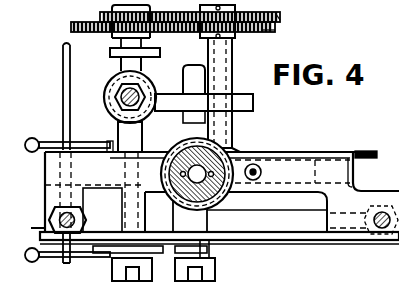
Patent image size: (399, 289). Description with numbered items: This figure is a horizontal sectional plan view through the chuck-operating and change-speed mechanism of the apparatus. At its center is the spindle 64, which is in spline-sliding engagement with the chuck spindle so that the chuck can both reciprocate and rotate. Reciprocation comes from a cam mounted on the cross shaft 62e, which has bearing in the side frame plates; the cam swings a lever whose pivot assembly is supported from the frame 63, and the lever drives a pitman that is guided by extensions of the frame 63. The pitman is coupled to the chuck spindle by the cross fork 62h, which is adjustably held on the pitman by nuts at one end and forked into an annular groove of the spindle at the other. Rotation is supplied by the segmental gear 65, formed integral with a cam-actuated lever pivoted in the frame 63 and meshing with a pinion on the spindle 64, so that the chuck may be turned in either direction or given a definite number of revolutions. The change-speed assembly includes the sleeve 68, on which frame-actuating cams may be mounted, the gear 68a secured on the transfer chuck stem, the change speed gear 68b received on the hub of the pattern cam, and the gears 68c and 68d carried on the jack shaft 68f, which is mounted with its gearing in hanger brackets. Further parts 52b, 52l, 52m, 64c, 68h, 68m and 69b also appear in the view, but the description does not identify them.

The vertical rod 52b is at (63, 95).
The lever arm 52l is at (31, 228).
The horizontal rod with knob 52m is at (110, 147).
The cross shaft 62e is at (121, 68).
The cross fork 62h is at (288, 231).
The frame 63 is at (357, 177).
The spindle 64 is at (238, 146).
The disc stem 64c is at (210, 255).
The segmental gear 65 is at (365, 150).
The sleeve 68 is at (120, 203).
The gear 68a is at (71, 28).
The change speed gear 68b is at (100, 15).
The gear 68c is at (280, 17).
The gear 68d is at (262, 30).
The jack shaft 68f is at (232, 60).
The clamp block 68h is at (235, 36).
The clamp bar 68m is at (112, 48).
The foot 69b is at (235, 277).